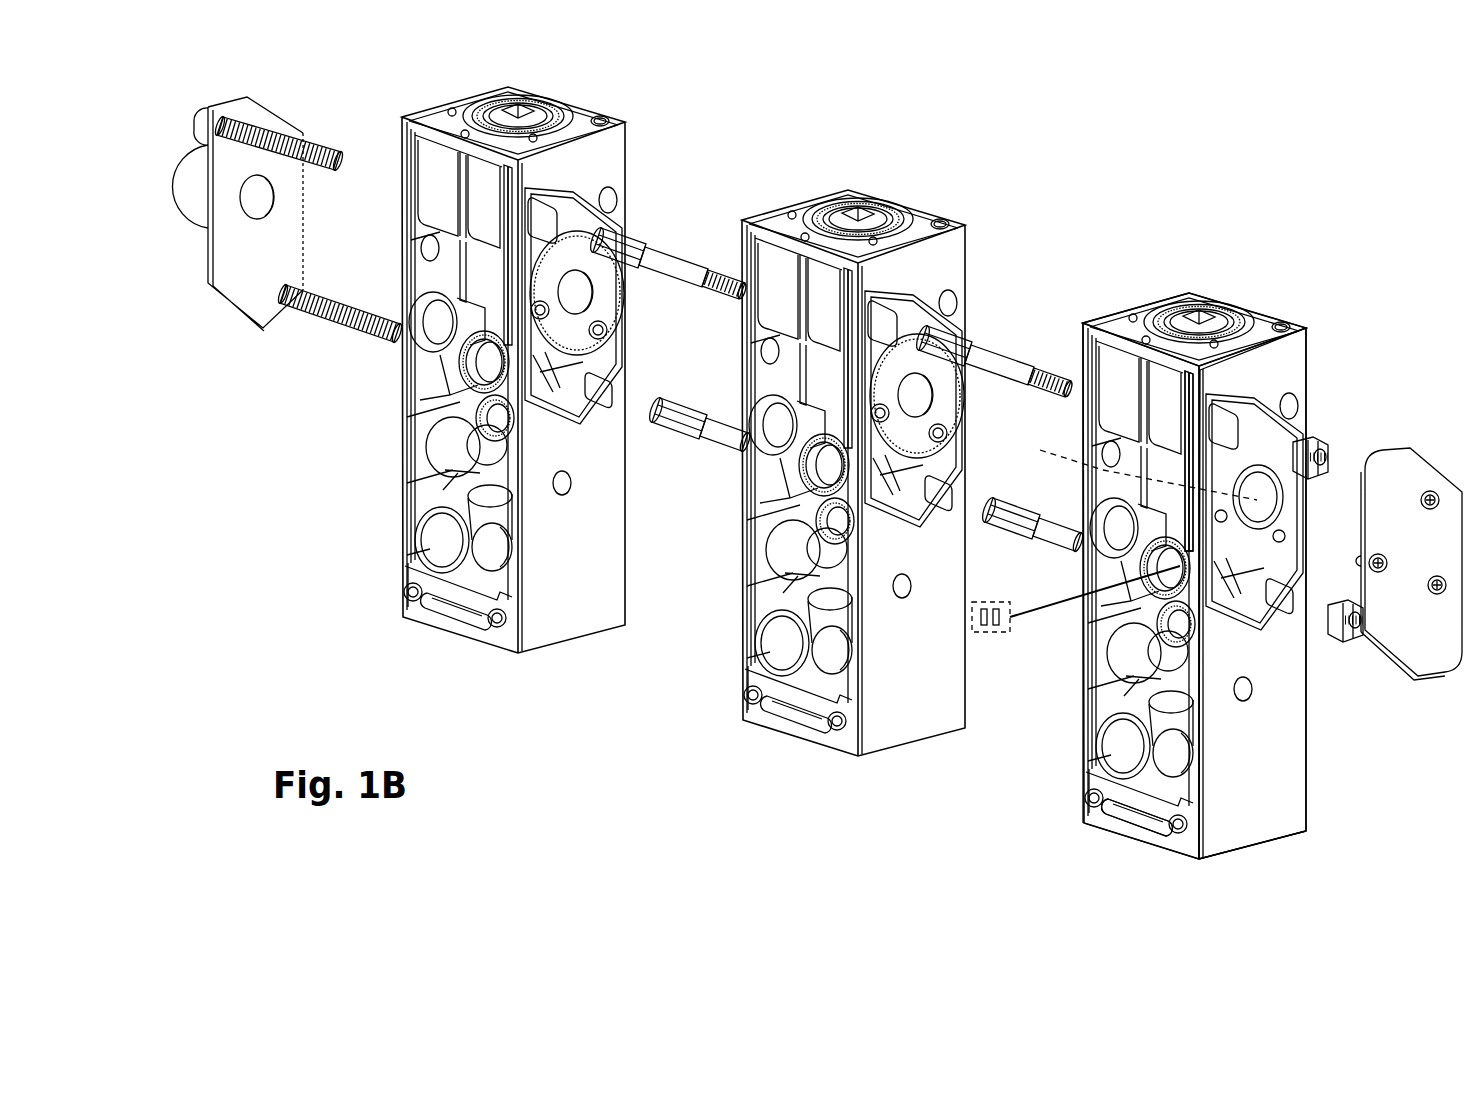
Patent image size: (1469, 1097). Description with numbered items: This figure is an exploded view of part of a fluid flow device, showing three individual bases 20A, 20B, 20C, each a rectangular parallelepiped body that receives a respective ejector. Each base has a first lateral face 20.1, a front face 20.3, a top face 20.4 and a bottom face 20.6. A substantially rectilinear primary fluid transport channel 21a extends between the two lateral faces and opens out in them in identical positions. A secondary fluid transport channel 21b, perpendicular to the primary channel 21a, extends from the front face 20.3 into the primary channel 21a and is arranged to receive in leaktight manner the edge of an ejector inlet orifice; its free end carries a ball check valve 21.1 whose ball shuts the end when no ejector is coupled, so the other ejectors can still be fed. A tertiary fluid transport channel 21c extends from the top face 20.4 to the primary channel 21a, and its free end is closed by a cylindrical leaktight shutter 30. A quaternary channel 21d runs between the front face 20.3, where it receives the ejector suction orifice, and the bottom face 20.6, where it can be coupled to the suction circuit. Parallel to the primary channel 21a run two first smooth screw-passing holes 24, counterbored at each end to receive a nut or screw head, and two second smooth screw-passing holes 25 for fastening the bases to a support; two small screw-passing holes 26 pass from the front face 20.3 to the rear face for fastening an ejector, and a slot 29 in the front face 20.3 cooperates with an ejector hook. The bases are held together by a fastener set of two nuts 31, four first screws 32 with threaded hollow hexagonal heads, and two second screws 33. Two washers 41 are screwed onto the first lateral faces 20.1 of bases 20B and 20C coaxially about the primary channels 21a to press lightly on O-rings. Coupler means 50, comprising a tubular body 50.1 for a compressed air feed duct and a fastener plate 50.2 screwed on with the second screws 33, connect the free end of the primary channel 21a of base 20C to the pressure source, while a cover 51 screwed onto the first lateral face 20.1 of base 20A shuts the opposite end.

The base 20A is at (1308, 348).
The base 20B is at (968, 248).
The base 20C is at (628, 145).
The first lateral face 20.1 is at (1297, 812).
The front face 20.3 is at (1078, 462).
The top face 20.4 is at (1107, 320).
The bottom face 20.6 is at (1258, 848).
The primary fluid transport channel 21a is at (1276, 495).
The secondary fluid transport channel 21b is at (1130, 578).
The tertiary fluid transport channel 21c is at (1210, 368).
The quaternary channel 21d is at (1115, 750).
The ball check valve 21.1 is at (1196, 590).
The first smooth screw-passing holes 24 is at (1222, 416).
The second smooth screw-passing holes 25 is at (1298, 405).
The small screw-passing holes 26 is at (1092, 508).
The slot 29 is at (1130, 822).
The leaktight shutter 30 is at (320, 140).
The nuts 31 is at (1328, 443).
The first screws 32 is at (680, 258).
The second screws 33 is at (347, 332).
The washers 41 is at (608, 297).
The coupler means 50 is at (204, 183).
The tubular body 50.1 is at (178, 178).
The fastener plate 50.2 is at (228, 265).
The cover 51 is at (1418, 648).